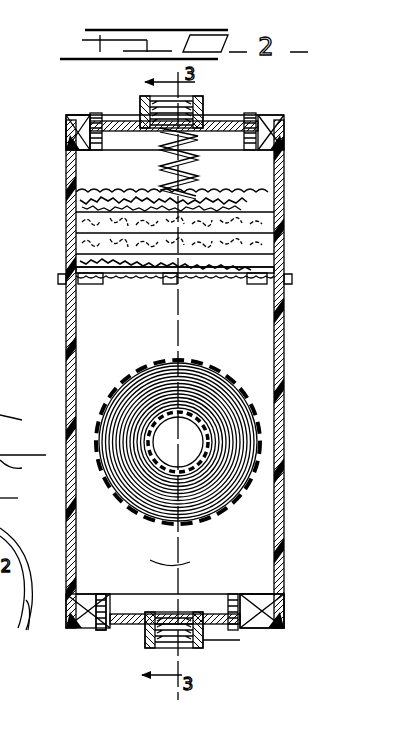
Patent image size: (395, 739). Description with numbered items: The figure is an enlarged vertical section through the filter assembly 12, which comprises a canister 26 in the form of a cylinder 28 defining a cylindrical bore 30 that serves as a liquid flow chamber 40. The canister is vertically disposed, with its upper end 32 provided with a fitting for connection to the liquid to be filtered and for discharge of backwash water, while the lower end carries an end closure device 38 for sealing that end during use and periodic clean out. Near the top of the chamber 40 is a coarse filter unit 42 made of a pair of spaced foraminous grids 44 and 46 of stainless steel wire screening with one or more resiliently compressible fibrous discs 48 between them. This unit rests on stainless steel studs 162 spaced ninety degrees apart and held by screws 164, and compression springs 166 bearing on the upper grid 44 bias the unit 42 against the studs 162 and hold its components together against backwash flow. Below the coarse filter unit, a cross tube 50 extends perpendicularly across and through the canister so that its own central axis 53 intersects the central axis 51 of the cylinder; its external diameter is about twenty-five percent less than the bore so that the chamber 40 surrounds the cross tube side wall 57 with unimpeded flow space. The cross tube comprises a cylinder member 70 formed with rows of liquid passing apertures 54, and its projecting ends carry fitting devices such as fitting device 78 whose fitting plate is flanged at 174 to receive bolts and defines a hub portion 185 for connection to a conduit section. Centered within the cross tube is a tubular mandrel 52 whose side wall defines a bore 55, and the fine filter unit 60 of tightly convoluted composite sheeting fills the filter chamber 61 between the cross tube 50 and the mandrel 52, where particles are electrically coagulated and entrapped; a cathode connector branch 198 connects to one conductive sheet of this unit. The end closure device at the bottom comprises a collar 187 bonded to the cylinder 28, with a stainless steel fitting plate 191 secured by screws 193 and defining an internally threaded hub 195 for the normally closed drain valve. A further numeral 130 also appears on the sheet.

The filter assembly 12 is at (56, 110).
The canister 26 is at (286, 120).
The cylinder 28 is at (286, 166).
The cylindrical bore 30 is at (268, 350).
The upper end 32 is at (68, 136).
The end closure device 38 is at (128, 640).
The liquid flow chamber 40 is at (252, 540).
The coarse filter unit 42 is at (66, 222).
The foraminous grid 44 is at (112, 190).
The foraminous grid 46 is at (140, 272).
The disc 48 is at (272, 208).
The cross tube 50 is at (170, 372).
The central axis 51 is at (182, 568).
The tubular mandrel 52 is at (162, 522).
The central axis 53 is at (188, 440).
The liquid passing apertures 54 is at (256, 454).
The bore 55 is at (190, 466).
The side wall 57 is at (135, 386).
The fine filter unit 60 is at (212, 384).
The filter chamber 61 is at (142, 516).
The cylinder member 70 is at (194, 376).
The fitting device 78 is at (11, 355).
The housing 130 is at (20, 8).
The stud 162 is at (92, 284).
The screw 164 is at (292, 280).
The compression spring 166 is at (212, 167).
The flange 174 is at (27, 497).
The hub portion 185 is at (28, 421).
The collar 187 is at (266, 630).
The fitting plate 191 is at (226, 612).
The screw 193 is at (100, 632).
The internally threaded hub 195 is at (205, 642).
The connector branch 198 is at (22, 632).